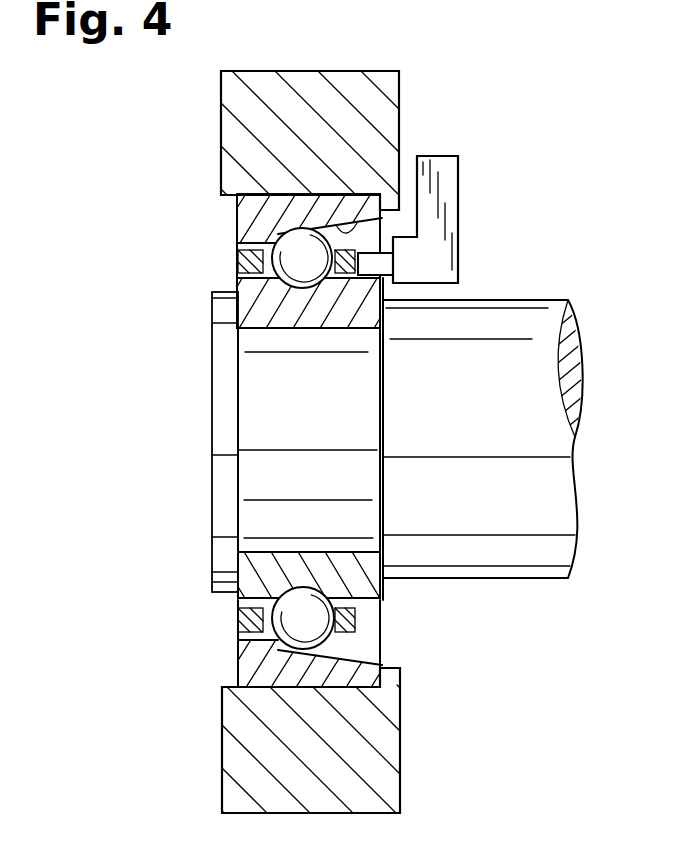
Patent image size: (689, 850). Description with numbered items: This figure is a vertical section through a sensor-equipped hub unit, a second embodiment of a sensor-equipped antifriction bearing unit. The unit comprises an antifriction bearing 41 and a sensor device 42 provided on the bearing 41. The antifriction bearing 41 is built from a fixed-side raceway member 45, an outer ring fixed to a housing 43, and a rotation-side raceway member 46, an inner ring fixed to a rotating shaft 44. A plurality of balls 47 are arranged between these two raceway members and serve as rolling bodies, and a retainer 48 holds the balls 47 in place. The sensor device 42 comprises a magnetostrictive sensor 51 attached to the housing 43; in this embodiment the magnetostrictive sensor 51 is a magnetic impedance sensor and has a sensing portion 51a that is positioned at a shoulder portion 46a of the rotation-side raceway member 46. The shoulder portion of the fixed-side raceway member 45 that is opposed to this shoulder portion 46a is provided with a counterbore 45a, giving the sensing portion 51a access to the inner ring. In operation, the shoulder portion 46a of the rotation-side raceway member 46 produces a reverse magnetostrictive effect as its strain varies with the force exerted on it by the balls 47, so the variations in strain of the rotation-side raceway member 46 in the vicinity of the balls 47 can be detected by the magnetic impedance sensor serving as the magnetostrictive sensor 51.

The antifriction bearing 41 is at (302, 390).
The sensor device 42 is at (478, 213).
The housing 43 is at (232, 122).
The rotating shaft 44 is at (260, 404).
The fixed-side raceway member 45 is at (240, 206).
The counterbore 45a is at (356, 222).
The rotation-side raceway member 46 is at (267, 313).
The shoulder portion 46a is at (384, 298).
The balls 47 is at (293, 270).
The retainer 48 is at (240, 262).
The magnetostrictive sensor 51 is at (448, 170).
The sensing portion 51a is at (380, 263).